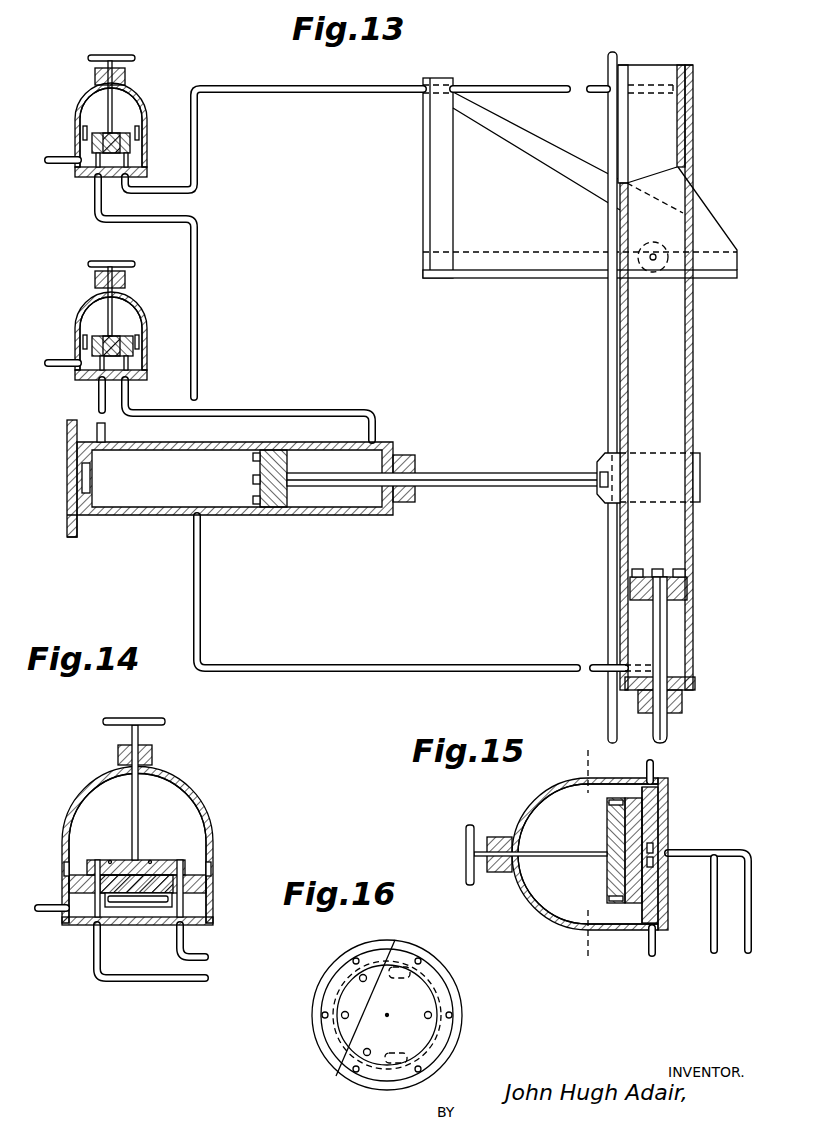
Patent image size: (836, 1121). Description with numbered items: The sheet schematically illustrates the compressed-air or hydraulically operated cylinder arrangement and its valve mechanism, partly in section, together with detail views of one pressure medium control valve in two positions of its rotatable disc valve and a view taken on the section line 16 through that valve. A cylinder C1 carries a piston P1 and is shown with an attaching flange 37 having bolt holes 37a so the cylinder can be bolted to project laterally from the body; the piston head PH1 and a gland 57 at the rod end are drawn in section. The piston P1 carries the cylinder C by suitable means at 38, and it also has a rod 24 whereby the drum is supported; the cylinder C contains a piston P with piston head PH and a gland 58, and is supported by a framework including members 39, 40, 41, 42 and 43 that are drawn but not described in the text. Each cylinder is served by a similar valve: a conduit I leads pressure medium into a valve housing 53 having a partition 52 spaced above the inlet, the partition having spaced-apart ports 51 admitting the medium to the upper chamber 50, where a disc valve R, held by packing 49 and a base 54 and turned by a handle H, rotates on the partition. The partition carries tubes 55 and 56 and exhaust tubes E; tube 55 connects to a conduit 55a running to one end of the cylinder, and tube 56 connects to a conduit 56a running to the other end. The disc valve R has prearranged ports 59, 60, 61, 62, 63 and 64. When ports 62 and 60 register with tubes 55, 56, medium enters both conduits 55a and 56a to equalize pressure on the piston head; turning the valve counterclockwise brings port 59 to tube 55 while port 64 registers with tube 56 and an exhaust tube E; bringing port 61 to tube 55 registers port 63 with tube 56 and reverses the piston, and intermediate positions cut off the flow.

In FIG. 13, the handle H is at (133, 54).
In FIG. 14, the handle H is at (153, 717).
In FIG. 15, the handle H is at (468, 828).
In FIG. 13, the packing gland 49 is at (127, 77).
In FIG. 14, the packing gland 49 is at (153, 756).
In FIG. 15, the packing gland 49 is at (497, 836).
In FIG. 13, the upper chamber 50 is at (97, 102).
In FIG. 14, the upper chamber 50 is at (112, 788).
In FIG. 15, the upper chamber 50 is at (550, 888).
In FIG. 13, the ports 51 is at (83, 128).
In FIG. 14, the ports 51 is at (66, 872).
In FIG. 15, the ports 51 is at (623, 790).
In FIG. 16, the ports 51 is at (355, 959).
In FIG. 13, the partition 52 is at (131, 144).
In FIG. 14, the partition 52 is at (208, 877).
In FIG. 15, the partition 52 is at (631, 795).
In FIG. 13, the valve housing 53 is at (133, 101).
In FIG. 14, the valve housing 53 is at (194, 791).
In FIG. 15, the valve housing 53 is at (539, 796).
In FIG. 13, the base plate 54 is at (84, 178).
In FIG. 14, the base plate 54 is at (88, 918).
In FIG. 15, the base plate 54 is at (650, 900).
In FIG. 13, the tube 55 is at (129, 158).
In FIG. 14, the tube 55 is at (70, 893).
In FIG. 15, the tube 55 is at (649, 866).
In FIG. 13, the tube 56 is at (129, 176).
In FIG. 14, the tube 56 is at (183, 909).
In FIG. 15, the tube 56 is at (650, 855).
In FIG. 13, the conduit 55a is at (199, 162).
In FIG. 14, the conduit 55a is at (147, 968).
In FIG. 15, the conduit 55a is at (717, 952).
In FIG. 13, the conduit 56a is at (131, 221).
In FIG. 14, the conduit 56a is at (205, 951).
In FIG. 15, the conduit 56a is at (751, 910).
In FIG. 13, the disc valve R is at (113, 131).
In FIG. 14, the disc valve R is at (160, 858).
In FIG. 13, the conduit I is at (62, 168).
In FIG. 14, the conduit I is at (53, 918).
In FIG. 15, the conduit I is at (659, 931).
In FIG. 14, the exhaust tube E is at (138, 907).
In FIG. 15, the exhaust tube E is at (654, 766).
In FIG. 13, the attaching flange 37 is at (67, 452).
In FIG. 13, the bolt holes 37a is at (67, 524).
In FIG. 13, the cylinder C1 is at (217, 442).
In FIG. 13, the piston head PH1 is at (277, 505).
In FIG. 13, the piston P1 is at (503, 470).
In FIG. 13, the packing gland 57 is at (411, 458).
In FIG. 13, the means 38 is at (600, 460).
In FIG. 13, the rod 24 is at (608, 368).
In FIG. 13, the cylinder C is at (693, 383).
In FIG. 13, the piston head PH is at (690, 586).
In FIG. 13, the piston P is at (668, 731).
In FIG. 13, the packing gland 58 is at (683, 701).
In FIG. 13, the upright post 39 is at (447, 192).
In FIG. 13, the brace 40 is at (547, 142).
In FIG. 13, the base bar 41 is at (515, 258).
In FIG. 13, the pivot pin 42 is at (653, 270).
In FIG. 13, the bracket 43 is at (638, 255).
In FIG. 15, the section line 16 is at (590, 746).
In FIG. 16, the port 59 is at (360, 977).
In FIG. 14, the port 60 is at (172, 862).
In FIG. 16, the port 60 is at (431, 1013).
In FIG. 16, the port 61 is at (407, 967).
In FIG. 14, the port 62 is at (100, 859).
In FIG. 16, the port 62 is at (342, 1013).
In FIG. 14, the port 63 is at (110, 860).
In FIG. 16, the port 63 is at (364, 1054).
In FIG. 14, the port 64 is at (150, 860).
In FIG. 16, the port 64 is at (400, 1063).